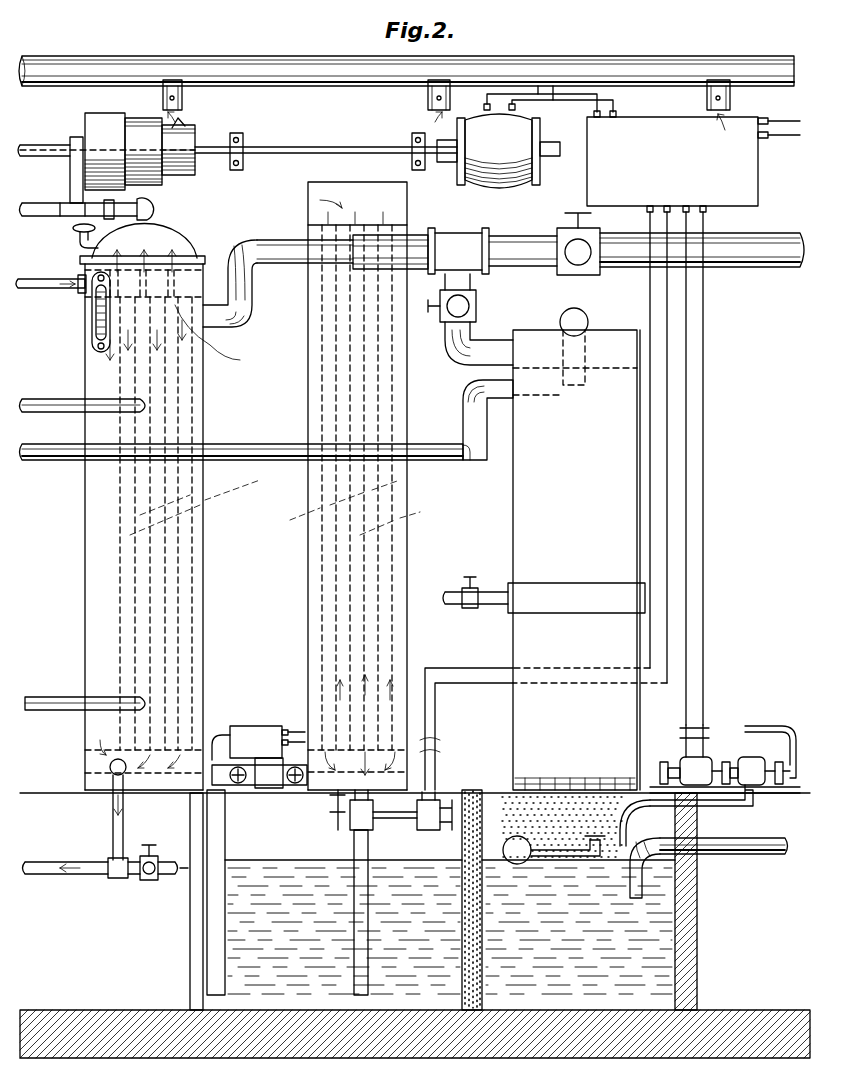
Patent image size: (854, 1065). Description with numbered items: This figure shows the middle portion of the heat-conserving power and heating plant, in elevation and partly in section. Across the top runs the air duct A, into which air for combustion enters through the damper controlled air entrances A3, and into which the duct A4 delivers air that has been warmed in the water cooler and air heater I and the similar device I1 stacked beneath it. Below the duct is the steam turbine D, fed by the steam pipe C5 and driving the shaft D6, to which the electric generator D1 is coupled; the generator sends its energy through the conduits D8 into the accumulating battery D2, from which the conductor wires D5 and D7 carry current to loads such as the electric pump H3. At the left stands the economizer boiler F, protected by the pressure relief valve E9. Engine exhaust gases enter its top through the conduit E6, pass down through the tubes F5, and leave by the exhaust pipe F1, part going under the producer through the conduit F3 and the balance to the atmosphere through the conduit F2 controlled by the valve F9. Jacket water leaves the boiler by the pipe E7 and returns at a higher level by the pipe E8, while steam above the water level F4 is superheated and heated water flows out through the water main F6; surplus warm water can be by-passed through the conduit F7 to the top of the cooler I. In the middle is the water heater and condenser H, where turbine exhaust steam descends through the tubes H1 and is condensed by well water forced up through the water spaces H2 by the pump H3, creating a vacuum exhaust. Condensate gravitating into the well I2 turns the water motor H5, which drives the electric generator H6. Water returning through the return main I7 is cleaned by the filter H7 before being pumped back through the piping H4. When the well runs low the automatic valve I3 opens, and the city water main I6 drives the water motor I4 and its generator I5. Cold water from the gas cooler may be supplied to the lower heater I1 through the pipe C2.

The air duct A is at (340, 72).
The damper controlled air entrances A3 is at (183, 100).
The duct A4 is at (48, 462).
The steam turbine D is at (188, 135).
The electric generator D1 is at (508, 146).
The accumulating battery D2 is at (672, 161).
The conductor wires D5 is at (792, 125).
The shaft D6 is at (286, 146).
The conductor wires D7 is at (458, 742).
The conduits D8 is at (540, 85).
The pipe C2 is at (452, 590).
The steam pipe C5 is at (35, 202).
The conduit E6 is at (63, 312).
The pipe E7 is at (85, 718).
The pipe E8 is at (48, 398).
The pressure relief valve E9 is at (73, 230).
The economizer boiler F is at (85, 540).
The exhaust pipe F1 is at (112, 828).
The conduit F2 is at (166, 878).
The conduit F3 is at (46, 878).
The water level F4 is at (214, 341).
The tubes F5 is at (195, 504).
The water main F6 is at (253, 290).
The conduit F7 is at (474, 316).
The valve F9 is at (142, 878).
The water heater and condenser H is at (307, 553).
The tubes H1 is at (335, 505).
The water spaces H2 is at (406, 517).
The electric pump H3 is at (250, 728).
The piping H4 is at (262, 788).
The water motor H5 is at (352, 818).
The electric generator H6 is at (430, 832).
The filter H7 is at (490, 776).
The water cooler and air heater I is at (576, 549).
The water cooler and air heater I1 is at (576, 622).
The well I2 is at (255, 935).
The automatic valve I3 is at (535, 846).
The water motor I4 is at (750, 760).
The generator I5 is at (700, 762).
The city water main I6 is at (790, 800).
The return main I7 is at (748, 856).